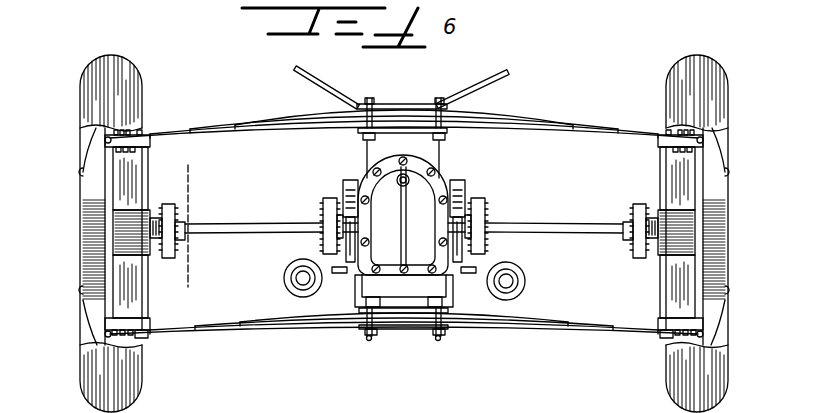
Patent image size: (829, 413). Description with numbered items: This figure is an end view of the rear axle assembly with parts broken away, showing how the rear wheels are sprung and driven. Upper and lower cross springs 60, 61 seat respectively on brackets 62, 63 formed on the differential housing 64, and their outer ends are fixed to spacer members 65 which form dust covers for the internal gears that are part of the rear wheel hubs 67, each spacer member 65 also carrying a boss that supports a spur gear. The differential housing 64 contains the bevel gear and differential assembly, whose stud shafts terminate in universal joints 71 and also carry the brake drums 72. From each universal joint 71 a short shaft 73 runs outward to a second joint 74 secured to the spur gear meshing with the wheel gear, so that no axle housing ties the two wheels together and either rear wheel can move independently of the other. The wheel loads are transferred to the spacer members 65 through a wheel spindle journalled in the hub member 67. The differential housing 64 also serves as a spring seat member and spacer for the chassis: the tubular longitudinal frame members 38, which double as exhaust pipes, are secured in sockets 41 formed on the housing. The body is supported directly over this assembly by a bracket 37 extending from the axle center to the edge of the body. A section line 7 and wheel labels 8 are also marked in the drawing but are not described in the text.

The section line 7- 7 is at (199, 176).
The wheel 8 is at (97, 152).
The bracket 37 is at (494, 79).
The longitudinal member 38 is at (300, 279).
The socket 41 is at (500, 273).
The upper cross spring 60 is at (526, 119).
The lower cross spring 61 is at (548, 324).
The bracket 62 is at (383, 143).
The bracket 63 is at (378, 286).
The differential housing 64 is at (423, 195).
The spacer member 65 is at (133, 183).
The rear wheel hub 67 is at (675, 263).
The universal joint 71 is at (333, 198).
The brake drum 72 is at (352, 180).
The short shaft 73 is at (268, 234).
The second joint 74 is at (177, 214).